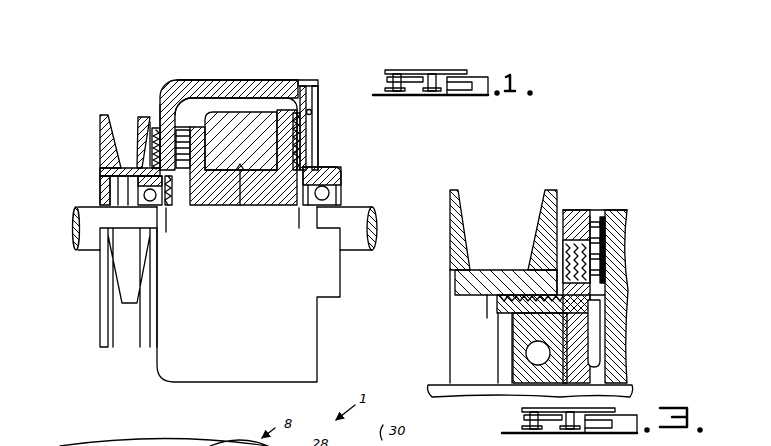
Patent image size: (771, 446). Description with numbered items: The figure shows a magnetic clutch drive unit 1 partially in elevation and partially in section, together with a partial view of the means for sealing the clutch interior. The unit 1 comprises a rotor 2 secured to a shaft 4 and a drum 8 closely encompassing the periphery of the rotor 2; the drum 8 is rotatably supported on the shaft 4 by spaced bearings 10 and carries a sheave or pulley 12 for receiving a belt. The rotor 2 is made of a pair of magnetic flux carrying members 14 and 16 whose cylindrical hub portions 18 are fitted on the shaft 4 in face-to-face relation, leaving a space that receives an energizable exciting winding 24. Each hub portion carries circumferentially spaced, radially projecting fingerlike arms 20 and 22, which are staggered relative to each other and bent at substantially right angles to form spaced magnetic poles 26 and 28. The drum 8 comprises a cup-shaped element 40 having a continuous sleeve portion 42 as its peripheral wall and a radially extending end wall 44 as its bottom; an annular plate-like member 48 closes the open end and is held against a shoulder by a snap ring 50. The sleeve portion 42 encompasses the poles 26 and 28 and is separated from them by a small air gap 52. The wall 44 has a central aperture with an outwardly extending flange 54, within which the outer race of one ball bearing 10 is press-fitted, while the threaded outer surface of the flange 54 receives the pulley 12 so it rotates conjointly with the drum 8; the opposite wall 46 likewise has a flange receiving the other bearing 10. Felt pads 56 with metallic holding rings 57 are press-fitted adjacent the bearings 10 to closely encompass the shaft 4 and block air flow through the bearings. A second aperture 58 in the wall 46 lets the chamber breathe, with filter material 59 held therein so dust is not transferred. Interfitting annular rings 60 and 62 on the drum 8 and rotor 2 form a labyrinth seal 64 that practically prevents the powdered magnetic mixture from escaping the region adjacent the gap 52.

In FIG. 1, the drive unit 1 is at (140, 81).
In FIG. 3, the rotor 2 is at (613, 250).
In FIG. 1, the shaft 4 is at (75, 220).
In FIG. 3, the shaft 4 is at (632, 395).
In FIG. 1, the drum 8 is at (203, 76).
In FIG. 3, the drum 8 is at (565, 220).
In FIG. 1, the bearings 10 is at (143, 193).
In FIG. 3, the bearings 10 is at (526, 352).
In FIG. 1, the pulley 12 is at (101, 280).
In FIG. 3, the pulley 12 is at (462, 205).
In FIG. 1, the magnetic flux carrying member 14 is at (319, 127).
In FIG. 1, the magnetic flux carrying member 16 is at (248, 294).
In FIG. 1, the hub portions 18 is at (243, 157).
In FIG. 1, the arms 20 is at (312, 113).
In FIG. 1, the arms 22 is at (163, 107).
In FIG. 1, the exciting winding 24 is at (241, 141).
In FIG. 1, the magnetic poles 26 is at (252, 100).
In FIG. 1, the magnetic poles 28 is at (212, 99).
In FIG. 1, the cup-shaped element 40 is at (160, 92).
In FIG. 1, the sleeve portion 42 is at (243, 106).
In FIG. 1, the end wall 44 is at (149, 121).
In FIG. 1, the wall 46 is at (156, 131).
In FIG. 1, the annular plate-like member 48 is at (305, 84).
In FIG. 1, the snap ring 50 is at (319, 95).
In FIG. 1, the air gap 52 is at (184, 106).
In FIG. 1, the flange 54 is at (127, 160).
In FIG. 3, the flange 54 is at (500, 306).
In FIG. 1, the felt pads 56 is at (166, 208).
In FIG. 3, the felt pads 56 is at (601, 345).
In FIG. 1, the holding ring 57 is at (140, 178).
In FIG. 3, the holding ring 57 is at (606, 307).
In FIG. 1, the second aperture 58 is at (151, 142).
In FIG. 1, the filter material 59 is at (191, 140).
In FIG. 3, the annular ring 60 is at (620, 223).
In FIG. 3, the annular ring 62 is at (606, 275).
In FIG. 3, the labyrinth seal 64 is at (594, 206).